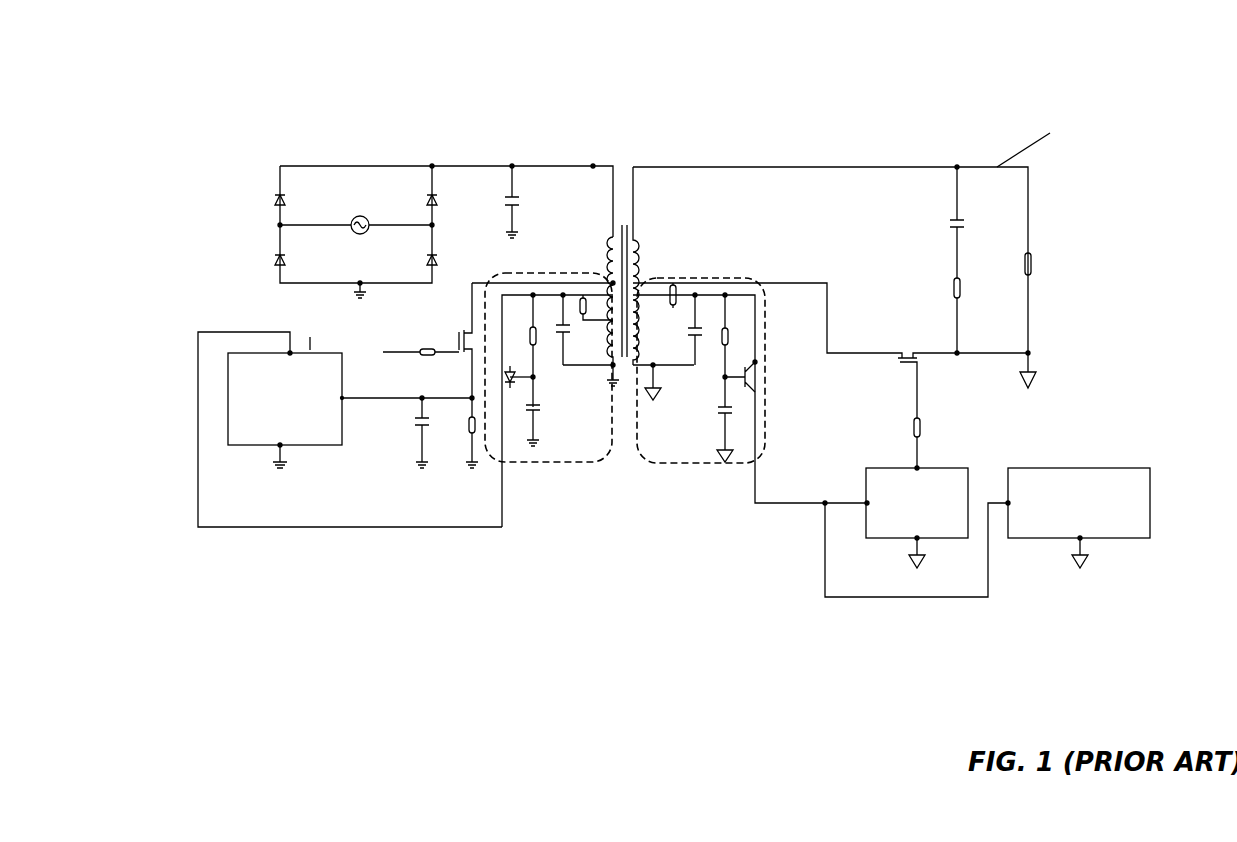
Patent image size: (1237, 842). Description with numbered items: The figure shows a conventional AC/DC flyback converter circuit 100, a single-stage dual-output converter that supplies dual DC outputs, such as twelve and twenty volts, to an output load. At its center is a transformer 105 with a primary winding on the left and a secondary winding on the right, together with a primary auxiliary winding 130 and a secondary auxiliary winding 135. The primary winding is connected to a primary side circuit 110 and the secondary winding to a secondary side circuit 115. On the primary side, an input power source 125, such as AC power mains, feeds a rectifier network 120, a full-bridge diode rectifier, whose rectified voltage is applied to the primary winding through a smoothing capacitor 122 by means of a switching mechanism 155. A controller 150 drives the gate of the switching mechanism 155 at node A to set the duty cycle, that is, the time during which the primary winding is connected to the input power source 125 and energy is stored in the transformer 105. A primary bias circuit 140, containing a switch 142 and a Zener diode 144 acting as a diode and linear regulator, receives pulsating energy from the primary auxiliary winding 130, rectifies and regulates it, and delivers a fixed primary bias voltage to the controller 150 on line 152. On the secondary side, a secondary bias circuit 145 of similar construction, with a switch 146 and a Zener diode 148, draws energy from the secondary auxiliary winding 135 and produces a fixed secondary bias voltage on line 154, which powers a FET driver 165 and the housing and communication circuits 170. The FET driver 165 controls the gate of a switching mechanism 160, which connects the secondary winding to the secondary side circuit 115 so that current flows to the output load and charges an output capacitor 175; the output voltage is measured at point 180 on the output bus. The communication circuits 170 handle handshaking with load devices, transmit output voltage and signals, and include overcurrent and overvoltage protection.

The flyback converter circuit 100 is at (285, 83).
The transformer 105 is at (667, 220).
The primary side circuit 110 is at (473, 145).
The secondary side circuit 115 is at (853, 143).
The rectifier network 120 is at (275, 185).
The smoothing capacitor 122 is at (533, 182).
The input power source 125 is at (345, 188).
The primary auxiliary winding 130 is at (607, 338).
The secondary auxiliary winding 135 is at (645, 332).
The primary bias circuit 140 is at (573, 472).
The switch 142 is at (515, 392).
The Zener diode D1 144 is at (540, 412).
The secondary bias circuit 145 is at (692, 467).
The switch 146 is at (765, 382).
The Zener diode D8 148 is at (710, 413).
The controller 150 is at (312, 475).
The line 152 is at (338, 530).
The line 154 is at (803, 505).
The switching mechanism 155 is at (432, 332).
The switching mechanism 160 is at (938, 372).
The FET driver 165 is at (950, 457).
The housing and communication circuits 170 is at (1077, 457).
The output capacitor 175 is at (943, 215).
The point on Vbus 180 is at (1025, 190).